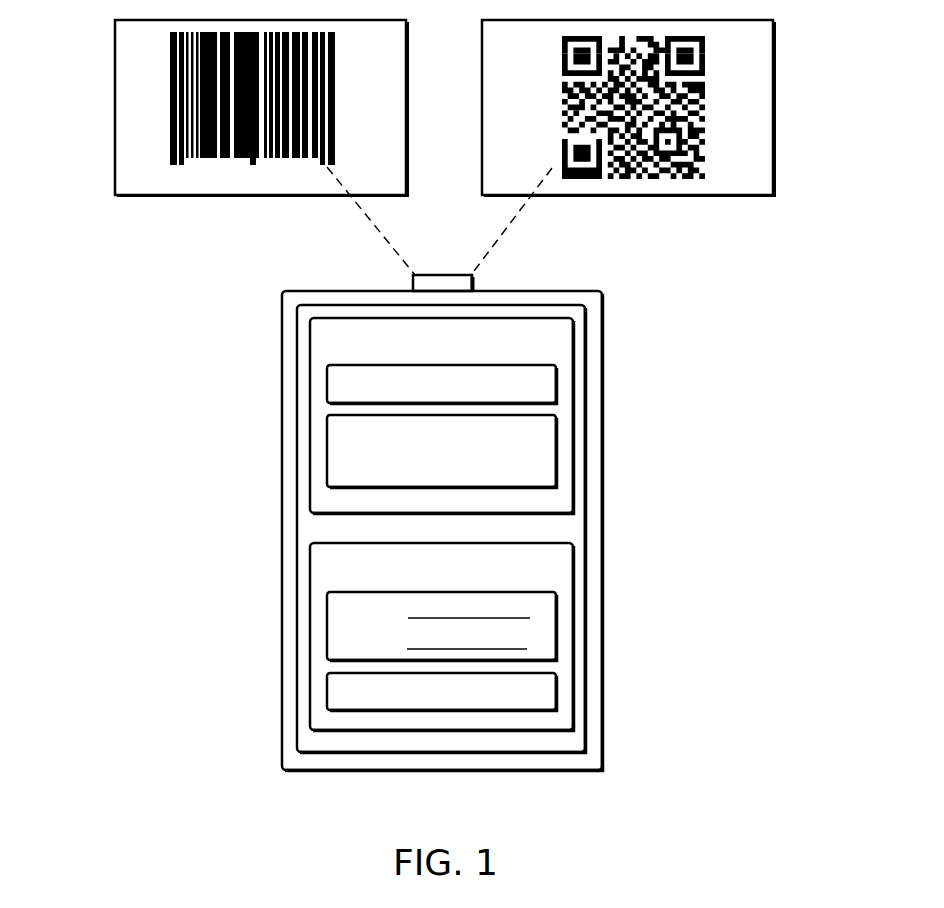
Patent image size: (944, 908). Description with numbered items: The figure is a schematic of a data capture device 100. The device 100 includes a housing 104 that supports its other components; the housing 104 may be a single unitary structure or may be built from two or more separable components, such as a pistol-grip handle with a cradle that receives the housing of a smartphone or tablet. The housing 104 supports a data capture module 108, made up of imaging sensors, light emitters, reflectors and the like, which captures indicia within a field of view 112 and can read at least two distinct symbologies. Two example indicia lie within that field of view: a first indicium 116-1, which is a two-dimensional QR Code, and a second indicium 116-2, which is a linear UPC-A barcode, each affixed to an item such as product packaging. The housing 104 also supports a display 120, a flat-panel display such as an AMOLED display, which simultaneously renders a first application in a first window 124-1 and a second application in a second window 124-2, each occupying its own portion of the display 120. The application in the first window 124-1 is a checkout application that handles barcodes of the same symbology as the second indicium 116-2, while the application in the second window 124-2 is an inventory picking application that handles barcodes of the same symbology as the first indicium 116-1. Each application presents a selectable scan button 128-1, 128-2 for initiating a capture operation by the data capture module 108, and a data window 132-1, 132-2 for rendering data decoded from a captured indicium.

The data capture device 100 is at (652, 348).
The housing 104 is at (602, 530).
The data capture module 108 is at (413, 288).
The field of view 112 is at (455, 255).
The first indicium 116-1 is at (703, 88).
The second indicium 116-2 is at (170, 121).
The display 120 is at (297, 530).
The first window 124-1 is at (440, 416).
The second window 124-2 is at (440, 637).
The scan button 128-1 is at (327, 383).
The scan button 128-2 is at (327, 693).
The data window 132-1 is at (327, 450).
The data window 132-2 is at (327, 627).